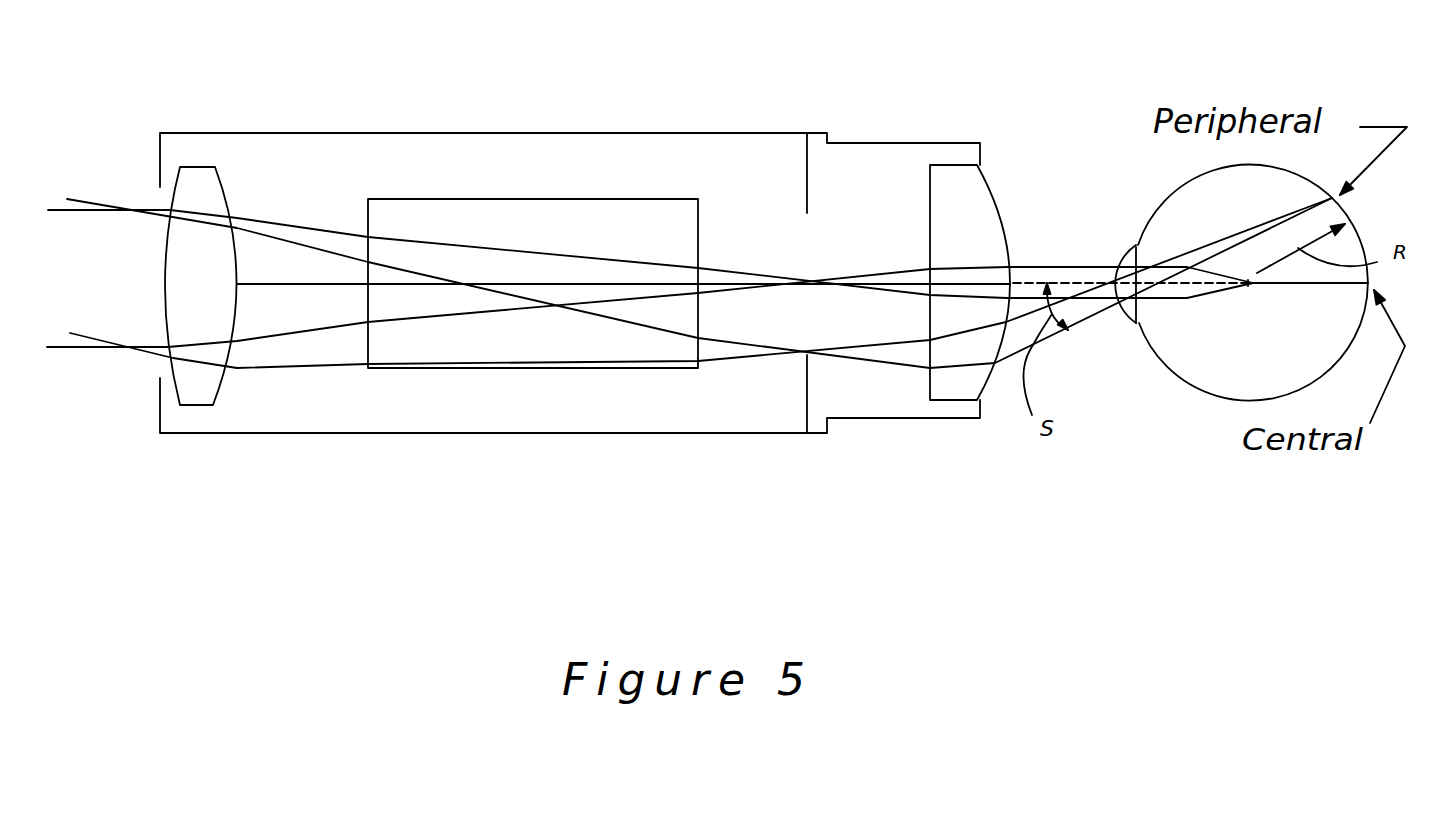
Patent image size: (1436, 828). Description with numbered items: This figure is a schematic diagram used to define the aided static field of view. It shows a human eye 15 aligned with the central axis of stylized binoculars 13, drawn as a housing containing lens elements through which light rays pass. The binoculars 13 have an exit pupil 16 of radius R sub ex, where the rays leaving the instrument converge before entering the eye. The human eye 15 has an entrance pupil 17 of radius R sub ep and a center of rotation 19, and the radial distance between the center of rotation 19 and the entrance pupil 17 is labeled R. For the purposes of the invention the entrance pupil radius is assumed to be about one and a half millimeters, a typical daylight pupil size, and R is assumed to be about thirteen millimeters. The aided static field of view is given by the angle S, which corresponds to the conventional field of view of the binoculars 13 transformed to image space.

The stylized binoculars 13 is at (400, 132).
The human eye 15 is at (1205, 392).
The exit pupil 16 is at (1137, 249).
The entrance pupil 17 is at (1137, 252).
The center of rotation 19 is at (1248, 287).